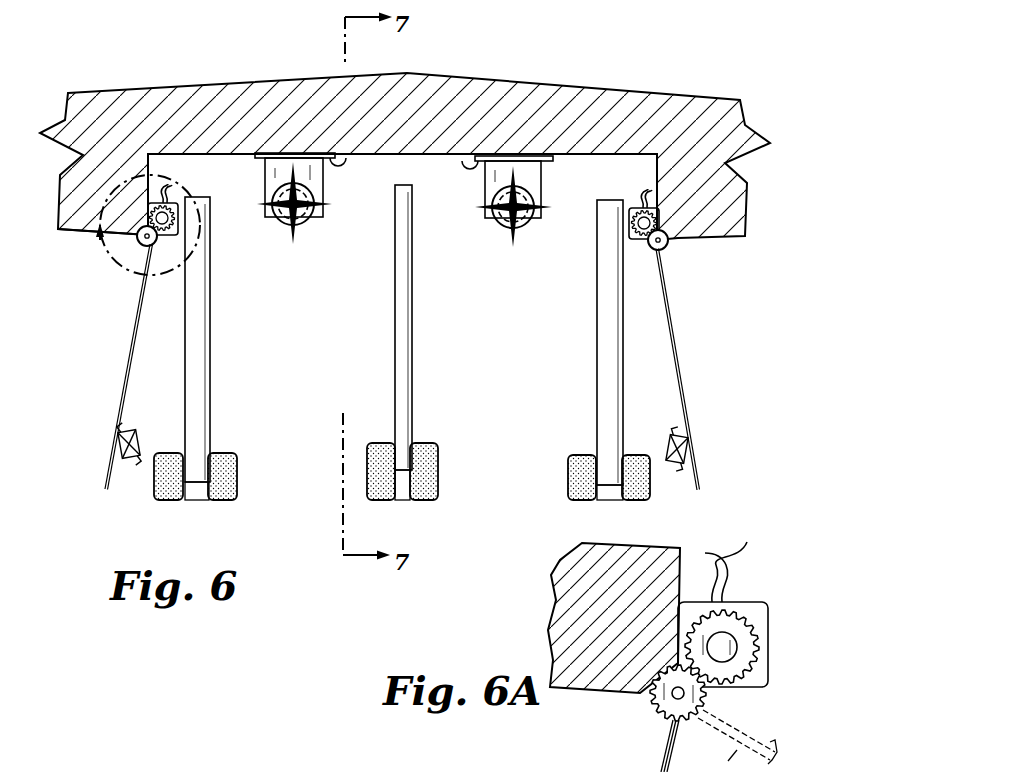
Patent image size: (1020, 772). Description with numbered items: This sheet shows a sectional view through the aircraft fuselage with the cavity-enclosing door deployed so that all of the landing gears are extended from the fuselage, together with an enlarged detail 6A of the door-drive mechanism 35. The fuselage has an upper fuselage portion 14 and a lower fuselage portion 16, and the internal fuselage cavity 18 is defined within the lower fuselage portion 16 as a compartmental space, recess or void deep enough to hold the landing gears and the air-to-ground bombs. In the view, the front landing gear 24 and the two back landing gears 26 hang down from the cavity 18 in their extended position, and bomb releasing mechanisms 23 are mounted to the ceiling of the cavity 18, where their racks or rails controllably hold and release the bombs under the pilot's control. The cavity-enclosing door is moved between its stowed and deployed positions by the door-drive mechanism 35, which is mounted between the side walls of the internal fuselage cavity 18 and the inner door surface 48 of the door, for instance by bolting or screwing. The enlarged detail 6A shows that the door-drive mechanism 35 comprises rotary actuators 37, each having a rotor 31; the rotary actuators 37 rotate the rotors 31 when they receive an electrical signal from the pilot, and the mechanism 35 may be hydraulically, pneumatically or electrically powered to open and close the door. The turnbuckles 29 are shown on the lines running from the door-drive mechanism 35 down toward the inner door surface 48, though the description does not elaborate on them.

In FIG. 6, the upper fuselage portion 14 is at (103, 84).
In FIG. 6, the lower fuselage portion 16 is at (66, 239).
In FIG. 6, the internal fuselage cavity 18 is at (568, 187).
In FIG. 6A, the internal fuselage cavity 18 is at (616, 746).
In FIG. 6, the bomb releasing mechanism 23 is at (333, 205).
In FIG. 6, the front landing gear 24 is at (436, 491).
In FIG. 6, the back landing gears 26 is at (237, 499).
In FIG. 6, the turnbuckle 29 is at (136, 462).
In FIG. 6A, the rotor 31 is at (712, 694).
In FIG. 6, the door-drive mechanism 35 is at (640, 266).
In FIG. 6A, the door-drive mechanism 35 is at (753, 586).
In FIG. 6A, the rotary actuators 37 is at (745, 629).
In FIG. 6, the inner door surface 48 is at (134, 343).
In FIG. 6, the detail view circle 6A is at (133, 272).